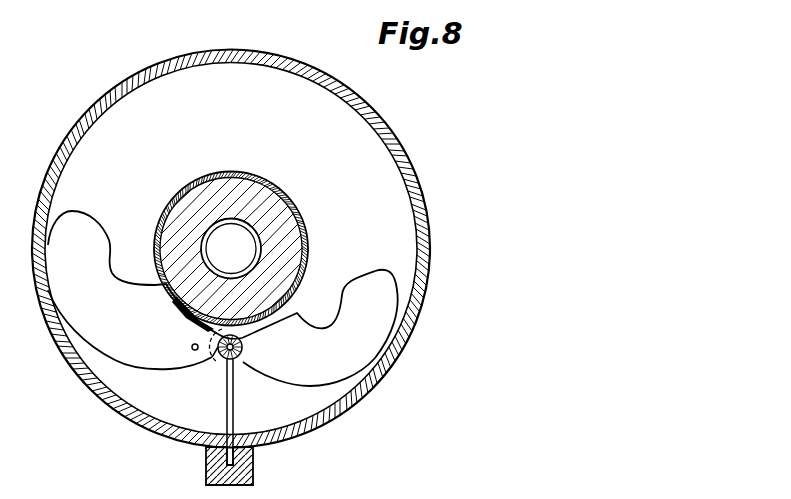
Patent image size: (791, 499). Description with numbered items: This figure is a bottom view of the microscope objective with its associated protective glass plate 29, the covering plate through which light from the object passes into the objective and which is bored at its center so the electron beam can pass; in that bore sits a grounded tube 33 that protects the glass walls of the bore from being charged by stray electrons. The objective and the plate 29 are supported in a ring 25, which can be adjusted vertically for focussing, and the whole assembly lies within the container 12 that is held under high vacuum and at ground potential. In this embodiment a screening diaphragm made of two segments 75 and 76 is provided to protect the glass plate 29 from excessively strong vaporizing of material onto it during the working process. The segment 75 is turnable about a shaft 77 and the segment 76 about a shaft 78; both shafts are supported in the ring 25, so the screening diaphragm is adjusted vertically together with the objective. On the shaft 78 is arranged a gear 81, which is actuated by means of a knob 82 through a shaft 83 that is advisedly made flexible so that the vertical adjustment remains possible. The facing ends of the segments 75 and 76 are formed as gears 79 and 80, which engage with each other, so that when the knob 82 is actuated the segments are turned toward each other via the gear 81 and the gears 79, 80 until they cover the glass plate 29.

The container 12 is at (403, 167).
The ring 25 is at (397, 212).
The covering plate 29 is at (264, 197).
The grounded tube 33 is at (249, 250).
The segment 75 is at (78, 223).
The segment 76 is at (360, 291).
The shaft 77 is at (192, 346).
The shaft 78 is at (237, 340).
The gear 79 is at (206, 364).
The gear 80 is at (217, 372).
The gear 81 is at (242, 350).
The knob 82 is at (253, 468).
The shaft 83 is at (234, 397).